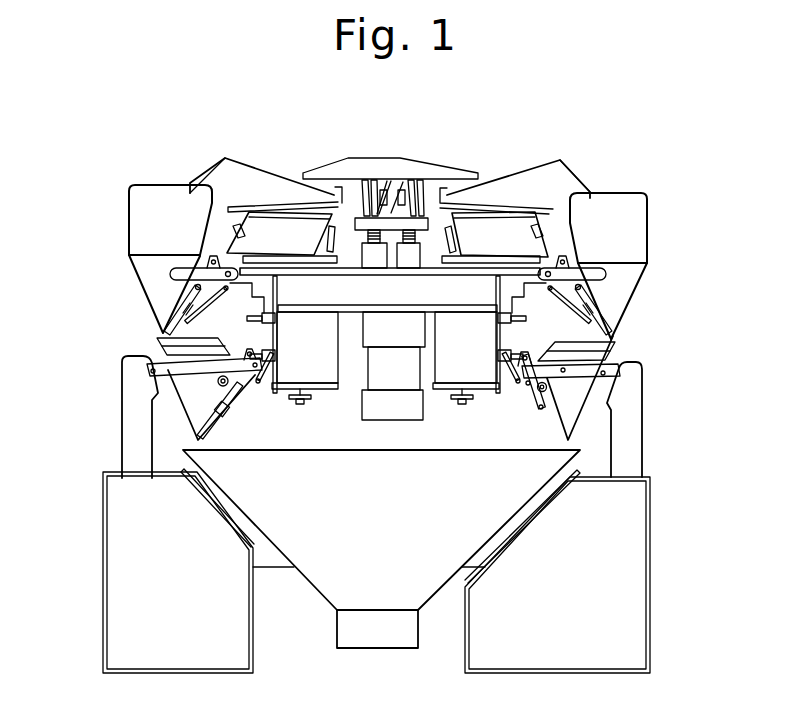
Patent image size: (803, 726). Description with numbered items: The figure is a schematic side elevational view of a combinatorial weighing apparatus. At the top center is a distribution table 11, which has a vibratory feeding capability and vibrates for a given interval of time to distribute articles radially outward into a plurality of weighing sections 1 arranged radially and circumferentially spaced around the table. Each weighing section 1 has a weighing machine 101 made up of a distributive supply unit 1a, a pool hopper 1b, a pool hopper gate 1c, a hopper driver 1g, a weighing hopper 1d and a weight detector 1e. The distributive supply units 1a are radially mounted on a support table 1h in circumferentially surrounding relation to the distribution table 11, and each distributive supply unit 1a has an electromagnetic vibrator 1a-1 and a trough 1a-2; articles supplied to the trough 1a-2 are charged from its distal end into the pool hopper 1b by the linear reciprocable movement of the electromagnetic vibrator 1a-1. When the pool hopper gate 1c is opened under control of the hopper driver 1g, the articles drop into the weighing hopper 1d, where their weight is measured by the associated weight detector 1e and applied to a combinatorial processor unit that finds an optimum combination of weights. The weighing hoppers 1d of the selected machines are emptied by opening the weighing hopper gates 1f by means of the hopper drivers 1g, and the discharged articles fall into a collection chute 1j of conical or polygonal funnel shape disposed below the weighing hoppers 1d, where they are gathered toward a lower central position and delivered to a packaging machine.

The weighing section 1 is at (151, 186).
The distributive supply unit 1a is at (259, 168).
The electromagnetic vibrator 1a-1 is at (284, 222).
The trough 1a-2 is at (213, 177).
The pool hopper 1b is at (147, 274).
The pool hopper gate 1c is at (183, 318).
The weighing hopper 1d is at (192, 398).
The weight detector 1e is at (133, 383).
The weighing hopper gate 1f is at (210, 413).
The hopper driver 1g is at (328, 367).
The support table 1h is at (345, 293).
The collection chute 1j is at (320, 590).
The distribution table 11 is at (410, 170).
The weighing machine 101 is at (100, 352).